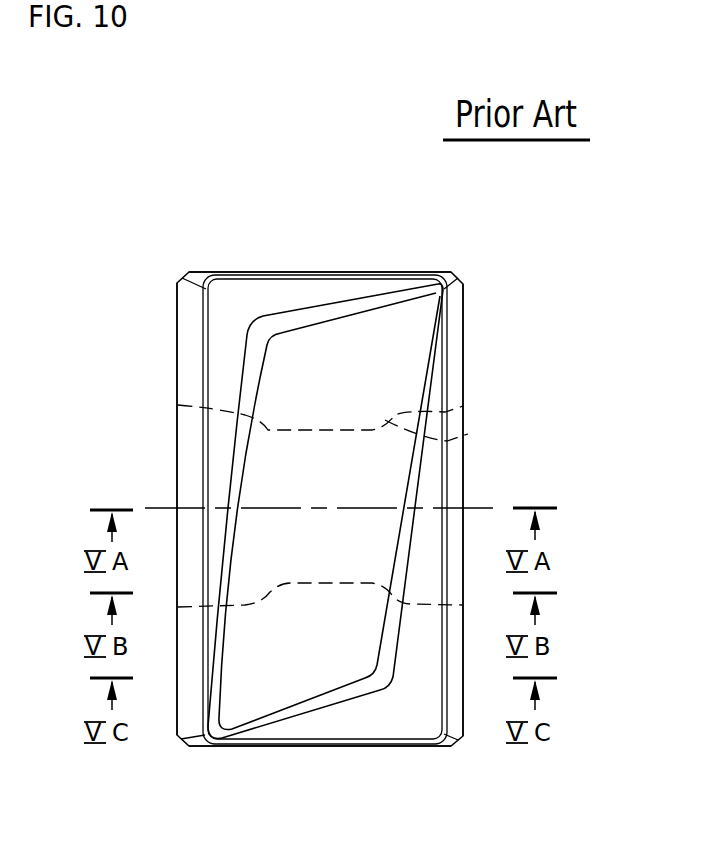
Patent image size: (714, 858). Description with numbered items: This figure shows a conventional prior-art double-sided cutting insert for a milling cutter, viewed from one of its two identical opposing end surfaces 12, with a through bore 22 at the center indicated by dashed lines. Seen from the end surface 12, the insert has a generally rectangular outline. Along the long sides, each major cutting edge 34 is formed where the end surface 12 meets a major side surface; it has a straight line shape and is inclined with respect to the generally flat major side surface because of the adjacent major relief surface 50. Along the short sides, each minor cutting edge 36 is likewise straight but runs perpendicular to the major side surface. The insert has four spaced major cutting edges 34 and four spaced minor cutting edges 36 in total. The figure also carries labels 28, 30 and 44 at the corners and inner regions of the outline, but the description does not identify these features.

The end surface 12 is at (275, 373).
The through bore 22 is at (447, 440).
The outer shell 28 is at (200, 271).
The corner 30 is at (450, 272).
The major cutting edge 34 is at (200, 458).
The minor cutting edge 36 is at (368, 268).
The inner panel 44 is at (266, 300).
The major relief surface 50 is at (192, 352).